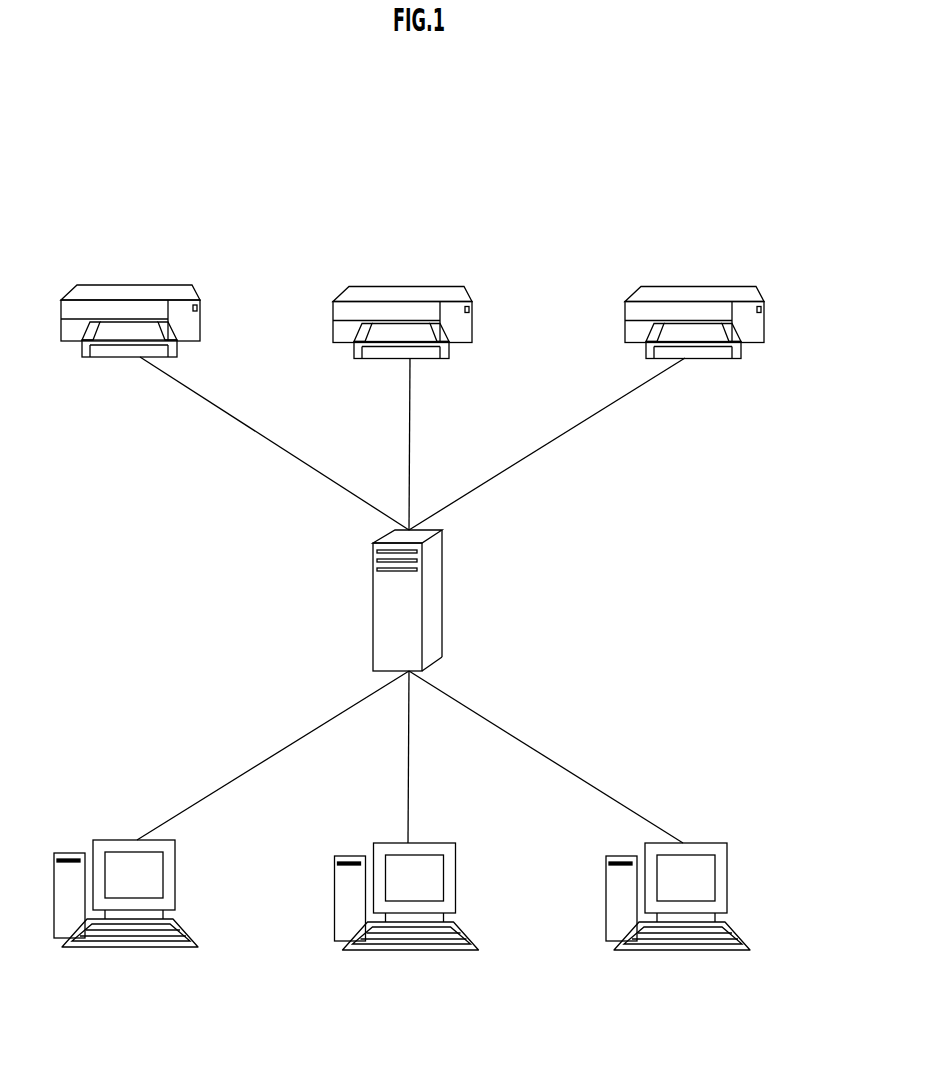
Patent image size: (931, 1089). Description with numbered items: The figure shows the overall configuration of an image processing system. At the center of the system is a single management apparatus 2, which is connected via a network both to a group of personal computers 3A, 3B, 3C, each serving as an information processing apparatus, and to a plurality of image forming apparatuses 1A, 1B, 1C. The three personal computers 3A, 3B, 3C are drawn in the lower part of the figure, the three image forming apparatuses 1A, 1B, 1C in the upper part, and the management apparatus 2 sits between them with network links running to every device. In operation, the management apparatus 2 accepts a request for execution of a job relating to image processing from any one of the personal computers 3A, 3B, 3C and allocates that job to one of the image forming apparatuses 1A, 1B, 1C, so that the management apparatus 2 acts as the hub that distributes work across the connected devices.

The image forming apparatus 1A is at (97, 285).
The image forming apparatus 1B is at (402, 309).
The image forming apparatus 1C is at (694, 309).
The management apparatus 2 is at (442, 598).
The personal computer 3A is at (177, 870).
The personal computer 3B is at (434, 896).
The personal computer 3C is at (704, 896).